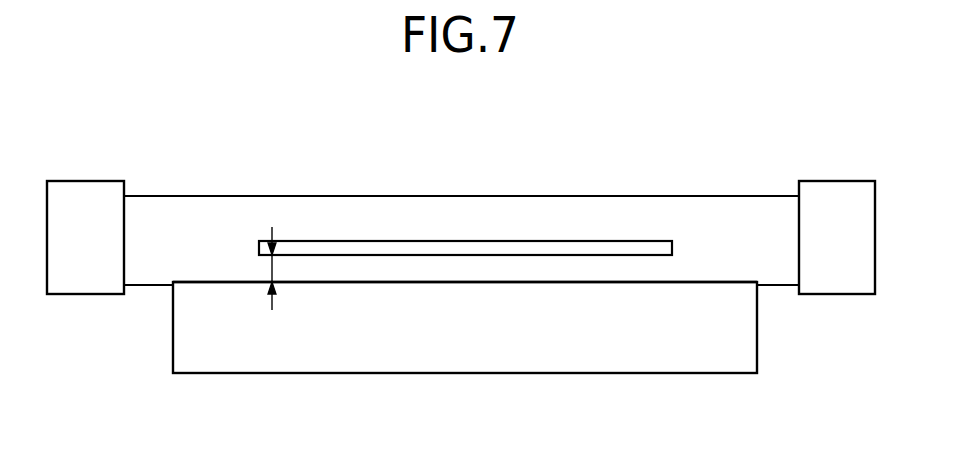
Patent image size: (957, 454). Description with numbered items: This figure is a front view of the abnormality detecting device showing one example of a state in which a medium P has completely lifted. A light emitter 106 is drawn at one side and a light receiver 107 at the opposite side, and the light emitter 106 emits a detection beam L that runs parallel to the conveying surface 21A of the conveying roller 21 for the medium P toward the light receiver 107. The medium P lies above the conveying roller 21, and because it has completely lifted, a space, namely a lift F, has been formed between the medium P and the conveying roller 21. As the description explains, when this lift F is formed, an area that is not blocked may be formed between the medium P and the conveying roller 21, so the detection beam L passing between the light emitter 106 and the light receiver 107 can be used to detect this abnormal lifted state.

The light emitter 106 is at (88, 195).
The light receiver 107 is at (835, 195).
The detection beam L is at (327, 210).
The conveying roller 21 is at (370, 362).
The conveying surface 21A is at (697, 281).
The medium P is at (445, 248).
The lift F is at (272, 270).